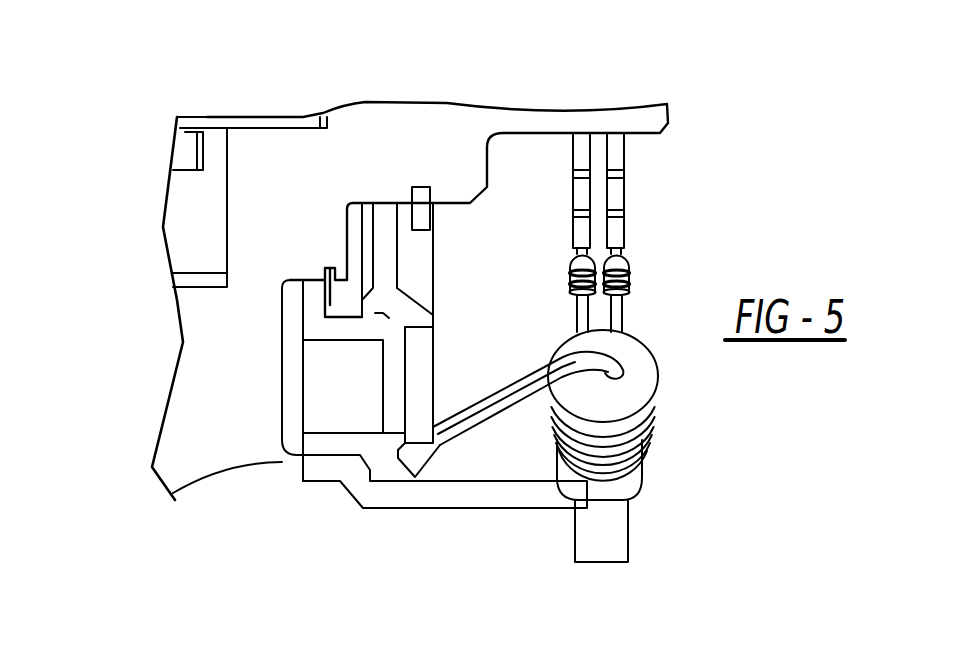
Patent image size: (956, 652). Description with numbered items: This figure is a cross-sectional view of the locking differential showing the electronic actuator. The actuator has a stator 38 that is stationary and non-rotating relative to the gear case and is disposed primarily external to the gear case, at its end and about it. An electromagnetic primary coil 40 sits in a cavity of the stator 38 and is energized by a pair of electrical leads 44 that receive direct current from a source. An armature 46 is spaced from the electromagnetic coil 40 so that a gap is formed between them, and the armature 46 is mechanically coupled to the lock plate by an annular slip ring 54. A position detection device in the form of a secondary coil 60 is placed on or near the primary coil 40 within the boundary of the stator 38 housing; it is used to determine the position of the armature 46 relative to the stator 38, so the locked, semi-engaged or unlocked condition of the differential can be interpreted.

The stator 38 is at (375, 327).
The electromagnetic coil 40 is at (350, 385).
The electrical leads 44 is at (490, 388).
The armature 46 is at (383, 217).
The annular slip ring 54 is at (421, 198).
The secondary coil 60 is at (396, 418).